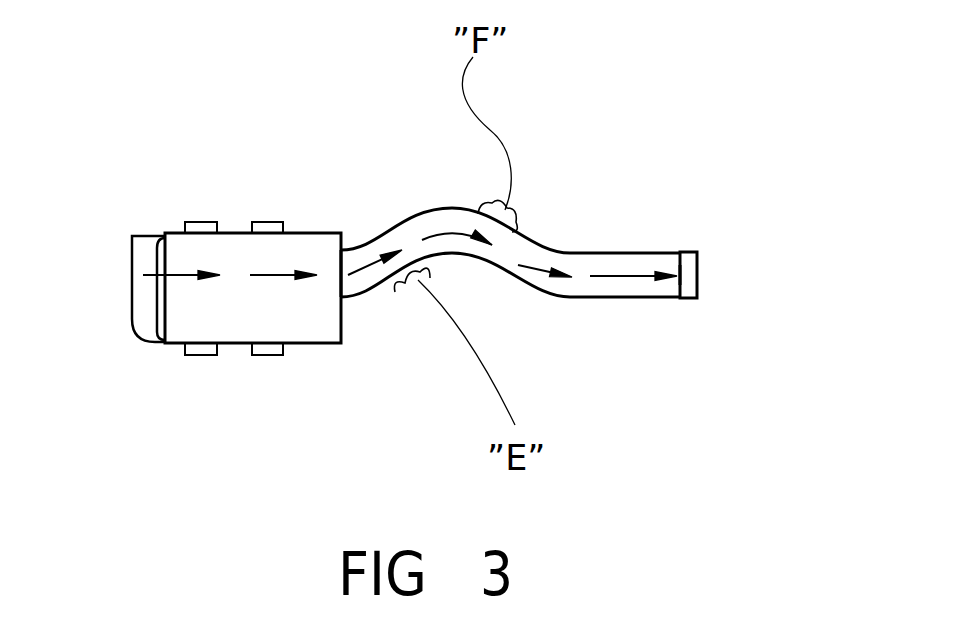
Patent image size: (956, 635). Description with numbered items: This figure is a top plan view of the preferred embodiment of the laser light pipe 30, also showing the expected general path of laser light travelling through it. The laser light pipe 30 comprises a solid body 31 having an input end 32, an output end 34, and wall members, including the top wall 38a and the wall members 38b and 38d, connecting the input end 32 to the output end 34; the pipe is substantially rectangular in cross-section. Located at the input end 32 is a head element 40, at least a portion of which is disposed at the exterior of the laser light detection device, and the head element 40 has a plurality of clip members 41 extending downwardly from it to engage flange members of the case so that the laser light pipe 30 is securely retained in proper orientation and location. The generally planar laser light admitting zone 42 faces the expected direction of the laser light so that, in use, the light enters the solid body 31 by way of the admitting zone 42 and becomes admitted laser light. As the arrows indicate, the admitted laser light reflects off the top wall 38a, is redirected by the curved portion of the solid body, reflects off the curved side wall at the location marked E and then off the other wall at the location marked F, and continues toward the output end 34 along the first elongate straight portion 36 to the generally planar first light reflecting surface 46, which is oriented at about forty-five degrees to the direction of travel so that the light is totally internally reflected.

The laser light pipe 30 is at (118, 110).
The solid body 31 is at (350, 296).
The input end 32 is at (140, 338).
The output end 34 is at (698, 278).
The first elongate straight portion 36 is at (643, 253).
The top wall 38a is at (455, 225).
The wall member 38b is at (522, 242).
The wall member 38d is at (607, 298).
The head element 40 is at (313, 345).
The clip members 41 is at (270, 220).
The laser light admitting zone 42 is at (160, 302).
The first light reflecting surface 46 is at (695, 260).